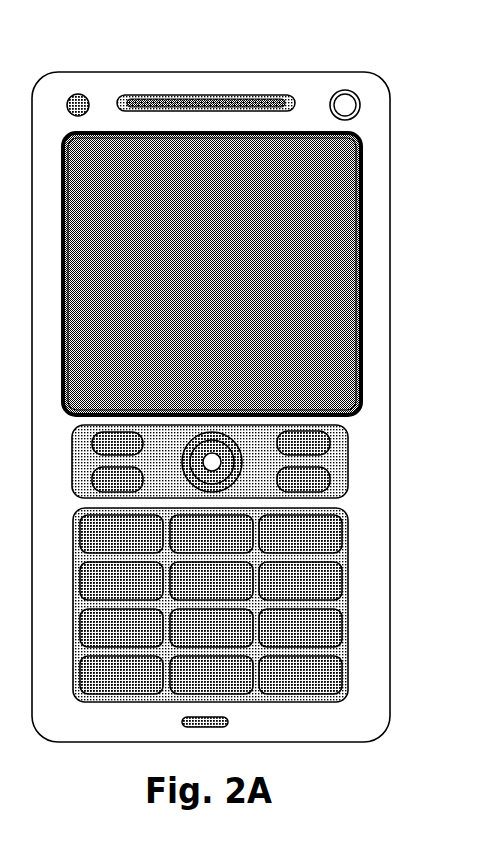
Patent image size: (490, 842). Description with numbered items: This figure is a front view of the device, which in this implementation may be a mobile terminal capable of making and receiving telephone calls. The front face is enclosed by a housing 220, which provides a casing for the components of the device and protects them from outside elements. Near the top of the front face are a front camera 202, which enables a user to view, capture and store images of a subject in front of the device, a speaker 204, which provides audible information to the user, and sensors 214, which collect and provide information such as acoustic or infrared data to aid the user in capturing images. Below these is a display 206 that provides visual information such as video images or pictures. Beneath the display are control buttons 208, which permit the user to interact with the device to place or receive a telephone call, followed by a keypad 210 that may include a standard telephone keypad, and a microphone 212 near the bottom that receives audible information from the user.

The front camera 202 is at (78, 93).
The speaker 204 is at (194, 95).
The display 206 is at (313, 133).
The control buttons 208 is at (348, 463).
The keypad 210 is at (348, 606).
The microphone 212 is at (228, 722).
The sensors 214 is at (357, 114).
The housing 220 is at (489, 282).